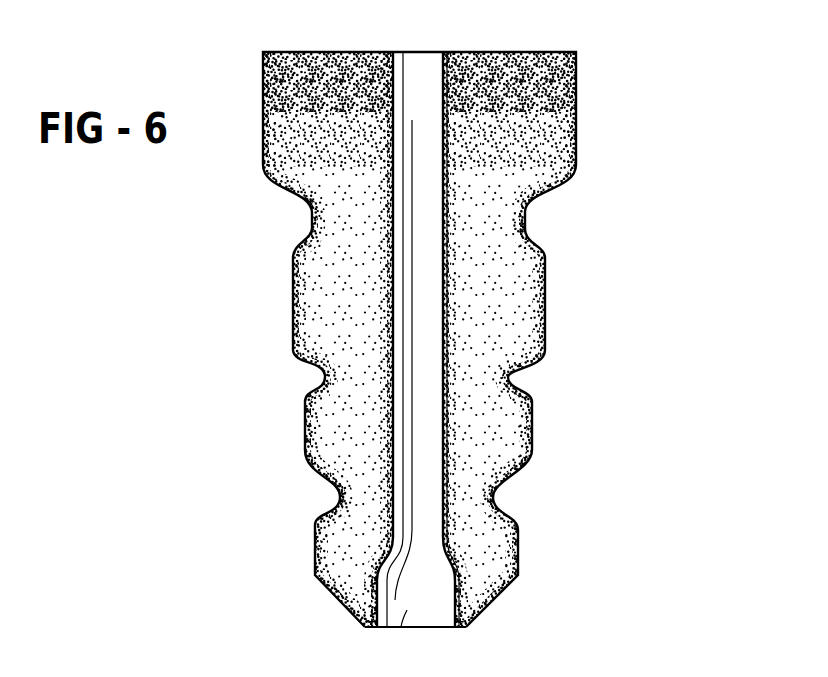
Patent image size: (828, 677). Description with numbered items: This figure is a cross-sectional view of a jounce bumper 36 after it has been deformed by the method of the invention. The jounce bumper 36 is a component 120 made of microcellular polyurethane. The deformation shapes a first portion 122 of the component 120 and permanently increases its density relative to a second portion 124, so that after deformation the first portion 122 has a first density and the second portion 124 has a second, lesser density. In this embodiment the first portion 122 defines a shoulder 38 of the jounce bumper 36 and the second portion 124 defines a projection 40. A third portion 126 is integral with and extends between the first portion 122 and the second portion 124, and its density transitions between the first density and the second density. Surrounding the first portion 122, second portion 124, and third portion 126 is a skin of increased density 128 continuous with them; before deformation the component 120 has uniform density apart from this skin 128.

The jounce bumper 36 is at (308, 318).
The component 120 is at (297, 347).
The first portion 122 is at (509, 83).
The shoulder 38 is at (593, 53).
The third portion 126 is at (593, 118).
The second portion 124 is at (482, 391).
The projection 40 is at (424, 389).
The skin of increased density 128 is at (572, 302).